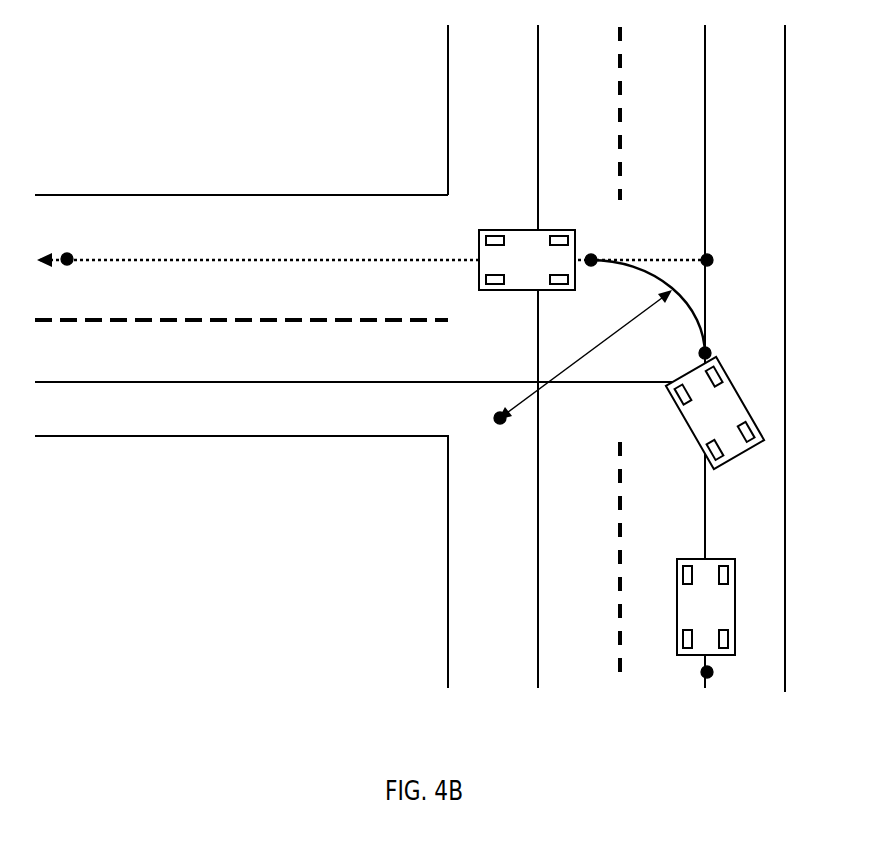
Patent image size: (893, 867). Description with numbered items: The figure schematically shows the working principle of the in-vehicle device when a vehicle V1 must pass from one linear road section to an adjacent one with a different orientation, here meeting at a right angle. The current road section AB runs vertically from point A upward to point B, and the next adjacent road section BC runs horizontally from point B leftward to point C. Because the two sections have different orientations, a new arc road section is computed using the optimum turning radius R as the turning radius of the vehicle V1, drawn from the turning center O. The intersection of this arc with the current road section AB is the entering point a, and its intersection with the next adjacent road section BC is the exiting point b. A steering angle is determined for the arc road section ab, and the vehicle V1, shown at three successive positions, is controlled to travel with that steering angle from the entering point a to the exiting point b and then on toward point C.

The vehicle V1 is at (621, 442).
The current road section endpoint A is at (727, 677).
The intersection point of road sections B is at (728, 247).
The next adjacent road section endpoint C is at (66, 242).
The entering point a is at (725, 355).
The exiting point b is at (595, 245).
The turning center O is at (490, 432).
The turning radius R is at (585, 355).